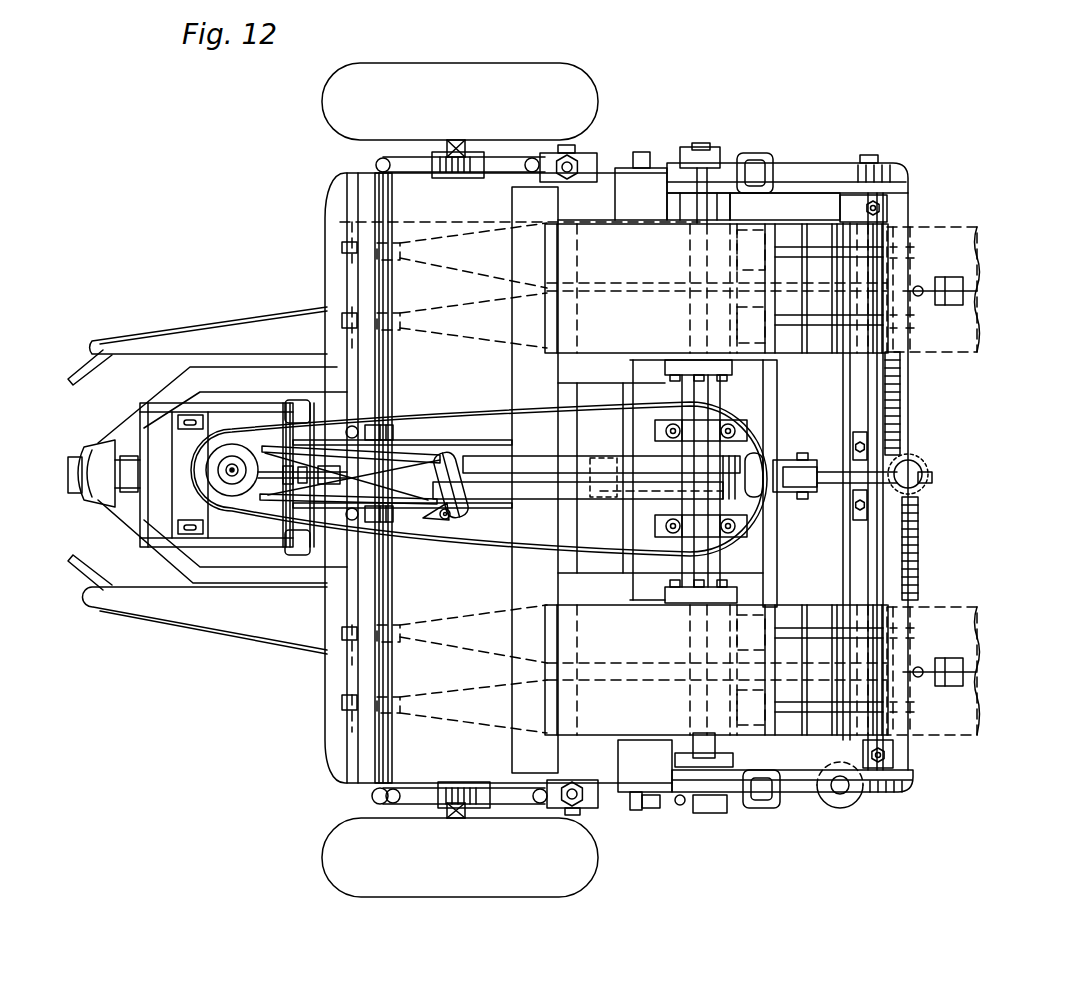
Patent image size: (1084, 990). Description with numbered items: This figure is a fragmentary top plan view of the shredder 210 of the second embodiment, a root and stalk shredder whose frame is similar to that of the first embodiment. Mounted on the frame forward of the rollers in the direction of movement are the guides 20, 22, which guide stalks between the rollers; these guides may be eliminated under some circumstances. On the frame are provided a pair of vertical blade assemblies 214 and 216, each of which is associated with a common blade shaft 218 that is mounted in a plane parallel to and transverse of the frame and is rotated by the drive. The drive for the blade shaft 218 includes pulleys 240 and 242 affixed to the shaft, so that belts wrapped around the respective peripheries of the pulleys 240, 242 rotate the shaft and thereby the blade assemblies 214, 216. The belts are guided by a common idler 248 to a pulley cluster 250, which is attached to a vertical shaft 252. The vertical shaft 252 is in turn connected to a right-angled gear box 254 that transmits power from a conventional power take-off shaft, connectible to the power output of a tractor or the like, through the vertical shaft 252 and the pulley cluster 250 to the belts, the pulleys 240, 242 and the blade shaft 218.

The guide 20 is at (183, 330).
The guide 22 is at (220, 637).
The shredder 210 is at (293, 302).
The vertical blade assembly 214 is at (595, 325).
The vertical blade assembly 216 is at (640, 640).
The common blade shaft 218 is at (705, 395).
The pulley 240 is at (497, 470).
The pulley 242 is at (538, 490).
The common idler 248 is at (462, 517).
The pulley cluster 250 is at (237, 448).
The vertical shaft 252 is at (236, 471).
The right-angled gear box 254 is at (242, 533).